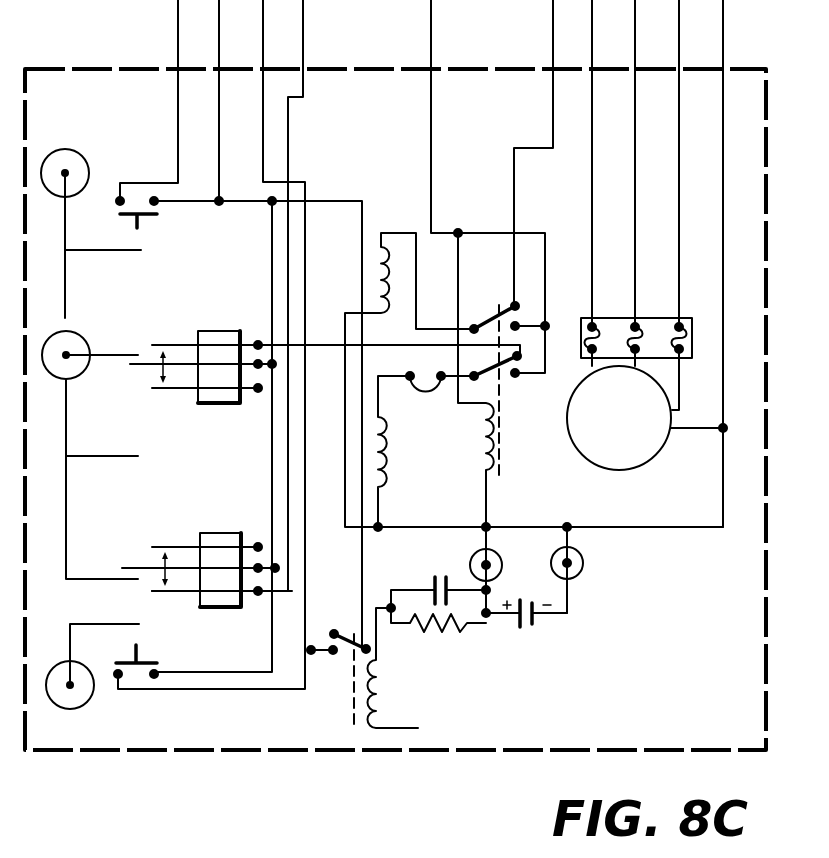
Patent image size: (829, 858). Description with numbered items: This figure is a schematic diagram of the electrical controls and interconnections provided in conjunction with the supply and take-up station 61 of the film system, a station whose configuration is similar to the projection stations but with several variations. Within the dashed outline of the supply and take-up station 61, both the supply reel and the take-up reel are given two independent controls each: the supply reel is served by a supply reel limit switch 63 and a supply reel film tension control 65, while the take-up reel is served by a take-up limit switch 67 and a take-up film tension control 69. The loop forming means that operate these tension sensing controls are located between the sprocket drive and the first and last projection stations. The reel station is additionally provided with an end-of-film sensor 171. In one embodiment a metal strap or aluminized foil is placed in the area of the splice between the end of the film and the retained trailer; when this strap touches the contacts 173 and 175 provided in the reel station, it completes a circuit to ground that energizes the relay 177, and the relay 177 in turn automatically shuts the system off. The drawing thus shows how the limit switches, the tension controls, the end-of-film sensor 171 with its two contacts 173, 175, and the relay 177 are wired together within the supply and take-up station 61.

The supply and take-up station 61 is at (774, 80).
The supply reel limit switch 63 is at (133, 168).
The supply reel film tension control 65 is at (220, 330).
The take-up limit switch 67 is at (164, 655).
The take-up film tension control 69 is at (219, 533).
The end-of-film sensor 171 is at (602, 589).
The contact 173 is at (473, 552).
The contact 175 is at (583, 560).
The relay 177 is at (338, 683).